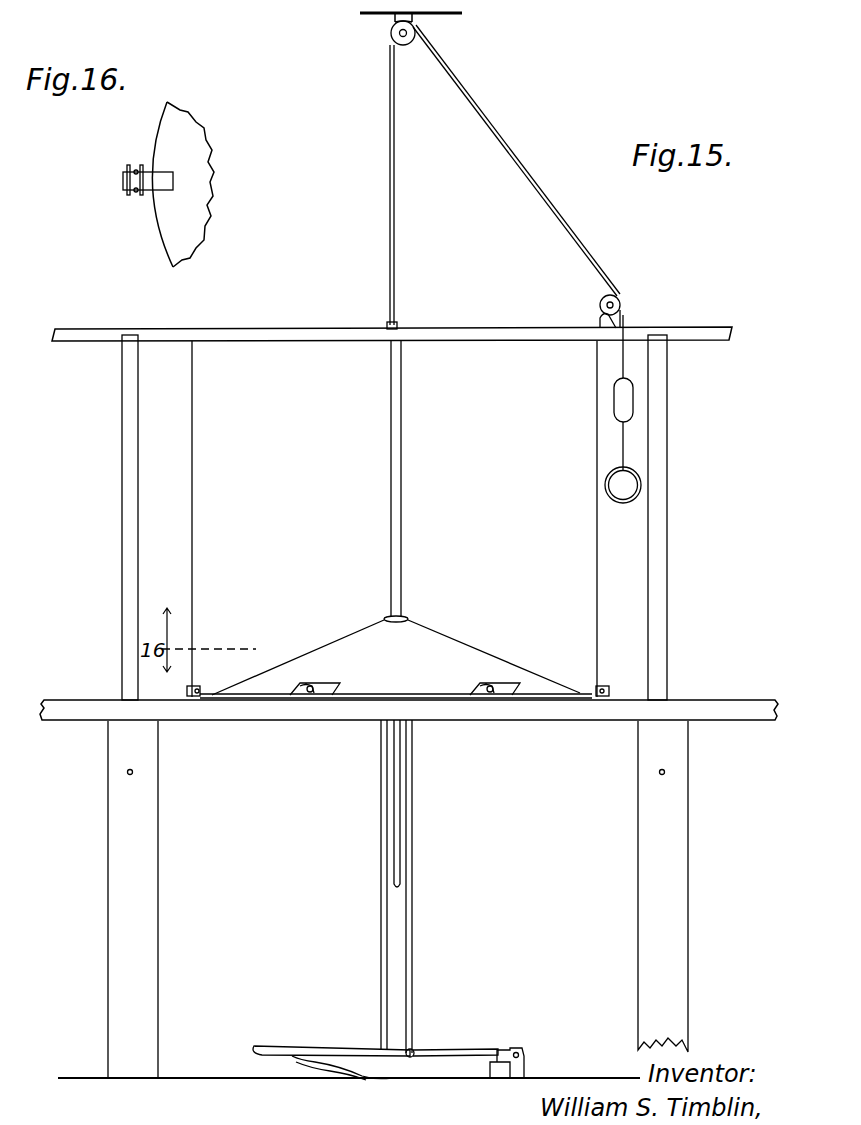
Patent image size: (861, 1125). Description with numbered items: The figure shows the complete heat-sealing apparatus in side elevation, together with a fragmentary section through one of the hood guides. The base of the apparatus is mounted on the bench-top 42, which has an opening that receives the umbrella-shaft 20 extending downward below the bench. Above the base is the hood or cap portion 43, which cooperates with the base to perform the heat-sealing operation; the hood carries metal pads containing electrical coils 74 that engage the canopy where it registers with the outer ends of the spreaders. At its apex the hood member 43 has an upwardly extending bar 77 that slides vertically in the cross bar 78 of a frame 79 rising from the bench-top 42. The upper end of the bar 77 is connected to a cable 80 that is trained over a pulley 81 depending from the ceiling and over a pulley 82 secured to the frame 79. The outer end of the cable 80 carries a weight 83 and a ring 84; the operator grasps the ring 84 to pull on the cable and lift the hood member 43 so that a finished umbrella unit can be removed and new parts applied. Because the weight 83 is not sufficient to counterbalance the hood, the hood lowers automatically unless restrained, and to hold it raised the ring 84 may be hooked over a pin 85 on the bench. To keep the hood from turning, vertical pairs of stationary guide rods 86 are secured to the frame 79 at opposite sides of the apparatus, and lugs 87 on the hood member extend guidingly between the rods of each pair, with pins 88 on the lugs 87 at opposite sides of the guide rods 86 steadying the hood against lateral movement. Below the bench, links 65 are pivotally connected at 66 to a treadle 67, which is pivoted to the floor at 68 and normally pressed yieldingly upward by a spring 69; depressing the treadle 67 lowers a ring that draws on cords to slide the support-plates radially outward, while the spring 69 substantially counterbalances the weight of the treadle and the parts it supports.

In FIG. 15, the umbrella-shaft 20 is at (397, 835).
In FIG. 15, the bench-top 42 is at (278, 720).
In FIG. 15, the hood or cap portion 43 is at (347, 640).
In FIG. 16, the hood or cap portion 43 is at (192, 148).
In FIG. 15, the links 65 is at (407, 918).
In FIG. 15, the pivotal connection 66 is at (414, 1050).
In FIG. 15, the treadle 67 is at (347, 1046).
In FIG. 15, the treadle pivot 68 is at (520, 1048).
In FIG. 15, the spring 69 is at (325, 1066).
In FIG. 15, the electrical coils 74 is at (490, 698).
In FIG. 15, the upwardly extending bar 77 is at (401, 484).
In FIG. 15, the cross bar 78 is at (315, 341).
In FIG. 15, the frame 79 is at (668, 560).
In FIG. 15, the cable 80 is at (392, 242).
In FIG. 15, the pulley 81 is at (408, 46).
In FIG. 15, the pulley 82 is at (600, 305).
In FIG. 15, the weight 83 is at (628, 404).
In FIG. 15, the ring 84 is at (632, 478).
In FIG. 15, the pin 85 is at (133, 773).
In FIG. 15, the guide rods 86 is at (194, 530).
In FIG. 16, the guide rods 86 is at (132, 165).
In FIG. 15, the lugs 87 is at (187, 690).
In FIG. 16, the lugs 87 is at (123, 181).
In FIG. 15, the pins 88 is at (200, 690).
In FIG. 16, the pins 88 is at (134, 194).